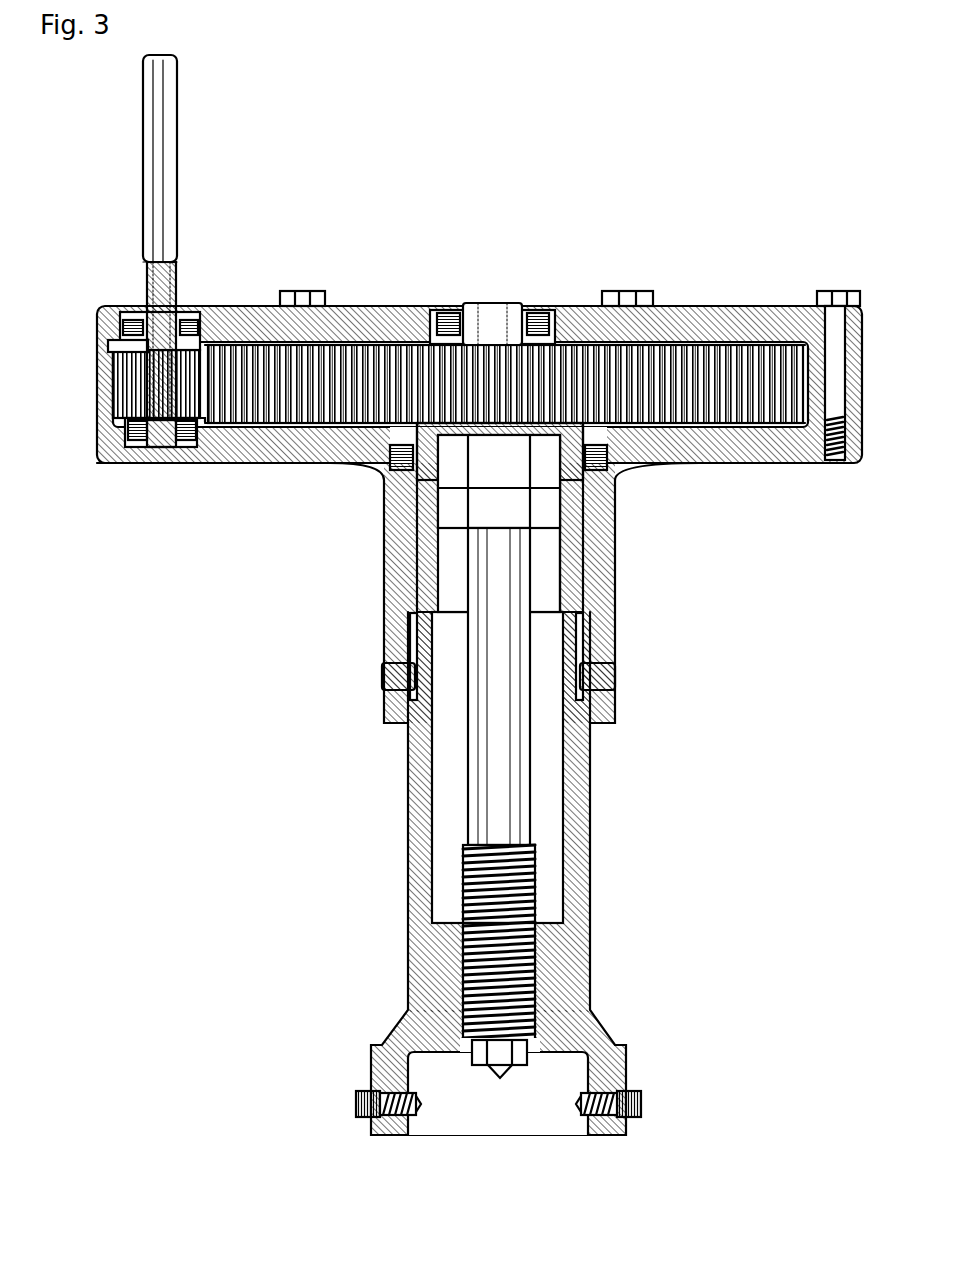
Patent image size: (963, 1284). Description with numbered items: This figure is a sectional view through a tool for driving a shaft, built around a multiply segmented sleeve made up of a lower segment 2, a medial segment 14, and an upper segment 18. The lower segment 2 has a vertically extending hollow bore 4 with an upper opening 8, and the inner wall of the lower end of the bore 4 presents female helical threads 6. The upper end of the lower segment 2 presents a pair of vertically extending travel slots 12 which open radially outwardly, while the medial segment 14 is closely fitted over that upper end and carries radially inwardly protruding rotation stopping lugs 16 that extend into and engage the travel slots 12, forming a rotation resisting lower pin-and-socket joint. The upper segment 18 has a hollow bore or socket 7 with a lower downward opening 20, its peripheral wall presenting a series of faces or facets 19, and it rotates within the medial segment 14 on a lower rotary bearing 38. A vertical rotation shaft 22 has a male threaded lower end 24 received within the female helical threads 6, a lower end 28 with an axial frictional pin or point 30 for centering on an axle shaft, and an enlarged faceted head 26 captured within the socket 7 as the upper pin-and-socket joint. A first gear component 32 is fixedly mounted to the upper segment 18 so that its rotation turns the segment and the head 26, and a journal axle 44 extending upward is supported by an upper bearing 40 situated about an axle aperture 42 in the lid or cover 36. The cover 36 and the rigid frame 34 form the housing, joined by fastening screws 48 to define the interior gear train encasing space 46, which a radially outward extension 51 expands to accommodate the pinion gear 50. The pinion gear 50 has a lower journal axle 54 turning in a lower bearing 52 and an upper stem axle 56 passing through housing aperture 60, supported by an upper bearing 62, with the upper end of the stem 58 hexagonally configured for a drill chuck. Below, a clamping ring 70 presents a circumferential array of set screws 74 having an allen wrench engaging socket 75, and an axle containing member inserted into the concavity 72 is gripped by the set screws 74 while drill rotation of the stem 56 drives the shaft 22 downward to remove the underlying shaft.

The lower segment 2 is at (410, 752).
The hollow bore 4 is at (548, 808).
The female helical threads 6 is at (533, 963).
The hollow bore or socket 7 is at (545, 556).
The upper opening 8 is at (455, 597).
The travel slots 12 is at (417, 633).
The medial segment 14 is at (430, 570).
The rotation stopping lugs 16 is at (395, 678).
The upper segment 18 is at (568, 547).
The faces or facets 19 is at (540, 462).
The lower downward opening 20 is at (578, 630).
The rotation shaft 22 is at (512, 733).
The male threaded lower end 24 is at (480, 900).
The faceted head 26 is at (455, 505).
The lower end 28 is at (520, 1065).
The axial frictional pin or point 30 is at (500, 1068).
The first gear component 32 is at (740, 400).
The rigid frame 34 is at (285, 455).
The lid or cover 36 is at (673, 325).
The lower rotary bearing 38 is at (398, 458).
The upper bearing 40 is at (448, 326).
The axle aperture 42 is at (530, 333).
The journal axle 44 is at (493, 320).
The interior gear train encasing space 46 is at (362, 355).
The fastening screws 48 is at (842, 375).
The pinion gear 50 is at (130, 385).
The radially outward extension 51 is at (105, 415).
The lower bearing 52 is at (135, 437).
The lower journal axle 54 is at (160, 445).
The upper stem axle 56 is at (168, 280).
The stem 58 is at (175, 82).
The housing aperture 60 is at (108, 345).
The upper bearing 62 is at (125, 322).
The clamping ring 70 is at (390, 1070).
The concavity 72 is at (462, 1115).
The set screws 74 is at (640, 1095).
The allen wrench engaging socket 75 is at (357, 1100).